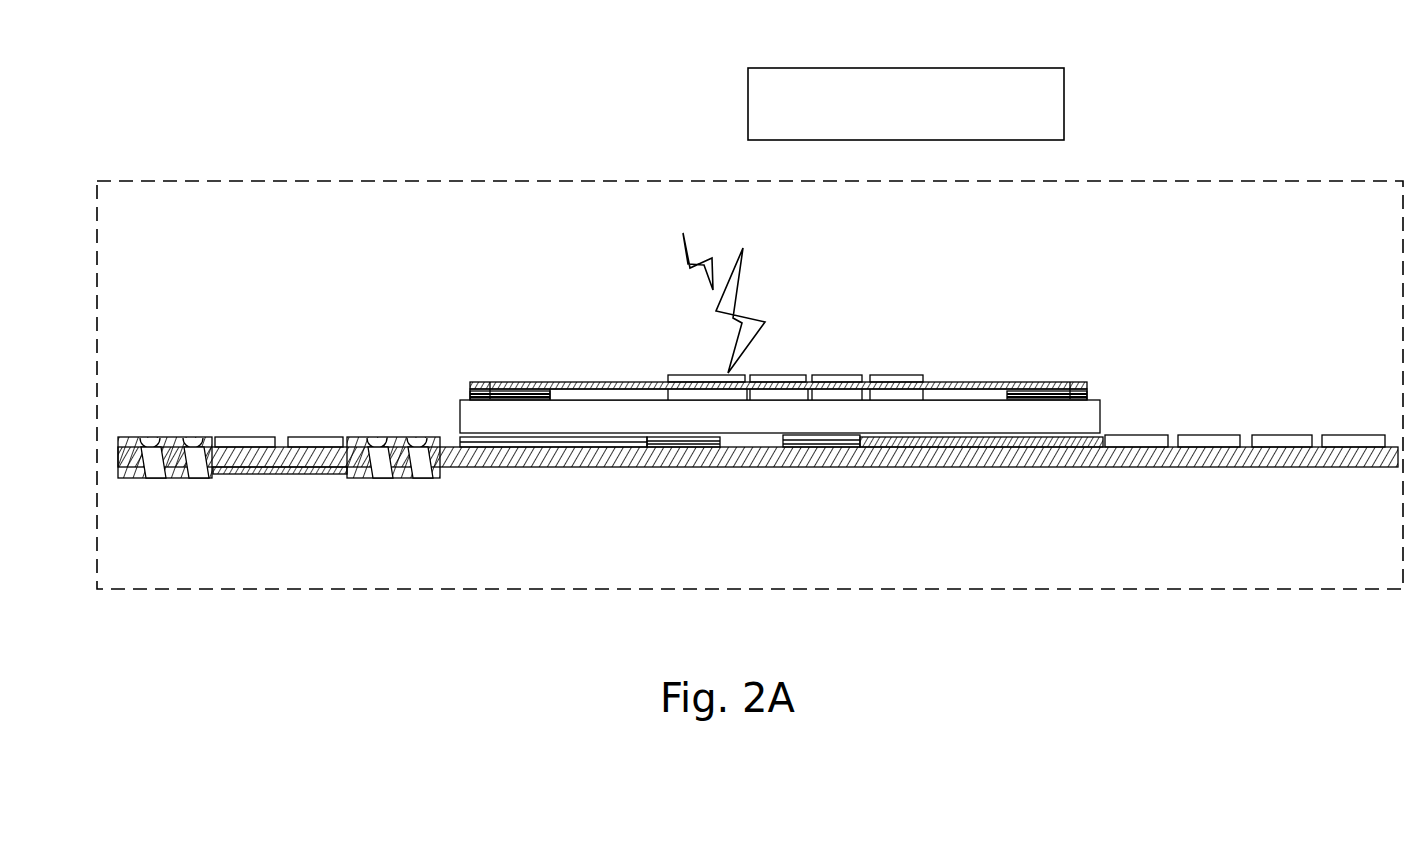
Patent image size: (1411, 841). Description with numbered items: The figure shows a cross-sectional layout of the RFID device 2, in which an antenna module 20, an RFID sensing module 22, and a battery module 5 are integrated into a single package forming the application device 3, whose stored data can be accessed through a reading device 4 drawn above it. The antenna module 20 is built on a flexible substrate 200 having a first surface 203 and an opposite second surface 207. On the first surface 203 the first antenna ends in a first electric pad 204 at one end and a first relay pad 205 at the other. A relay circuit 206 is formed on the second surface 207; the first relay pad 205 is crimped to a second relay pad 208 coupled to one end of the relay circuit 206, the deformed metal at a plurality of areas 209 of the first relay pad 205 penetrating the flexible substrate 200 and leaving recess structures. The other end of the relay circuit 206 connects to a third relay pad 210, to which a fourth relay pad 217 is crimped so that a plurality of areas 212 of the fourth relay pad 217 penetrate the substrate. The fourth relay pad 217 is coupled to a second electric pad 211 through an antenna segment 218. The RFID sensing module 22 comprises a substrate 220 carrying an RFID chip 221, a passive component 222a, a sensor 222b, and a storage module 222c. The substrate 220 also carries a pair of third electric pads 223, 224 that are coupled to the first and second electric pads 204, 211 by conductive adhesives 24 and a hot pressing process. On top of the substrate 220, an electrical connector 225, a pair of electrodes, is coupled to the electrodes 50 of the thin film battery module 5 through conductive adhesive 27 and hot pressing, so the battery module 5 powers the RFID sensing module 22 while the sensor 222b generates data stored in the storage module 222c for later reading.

The RFID device 2 is at (1125, 292).
The application device 3 is at (185, 181).
The reading device 4 is at (1056, 95).
The battery module 5 is at (470, 385).
The antenna module 20 is at (1245, 445).
The RFID sensing module 22 is at (1107, 400).
The conductive adhesives 24 is at (745, 466).
The conductive adhesive 27 is at (545, 398).
The electrodes of the battery module 50 is at (490, 383).
The flexible substrate 200 is at (1013, 468).
The first surface 203 is at (1393, 445).
The first electric pad 204 is at (825, 467).
The first relay pad 205 is at (128, 440).
The relay circuit 206 is at (257, 475).
The second surface 207 is at (606, 467).
The second relay pad 208 is at (157, 475).
The areas of the first relay pad 209 is at (186, 440).
The third relay pad 210 is at (380, 472).
The second electric pad 211 is at (680, 465).
The areas of the fourth relay pad 212 is at (414, 440).
The fourth relay pad 217 is at (357, 440).
The antenna segment 218 is at (497, 467).
The substrate 220 is at (460, 418).
The RFID chip 221 is at (703, 375).
The passive component 222a is at (912, 375).
The sensor 222b is at (830, 375).
The storage module 222c is at (798, 375).
The third electric pad 223 is at (796, 437).
The third electric pad 224 is at (680, 437).
The electrical connector 225 is at (512, 382).